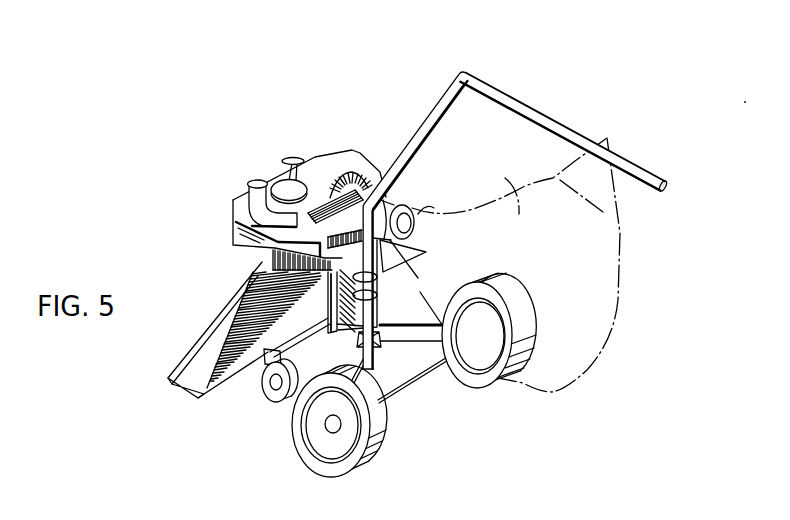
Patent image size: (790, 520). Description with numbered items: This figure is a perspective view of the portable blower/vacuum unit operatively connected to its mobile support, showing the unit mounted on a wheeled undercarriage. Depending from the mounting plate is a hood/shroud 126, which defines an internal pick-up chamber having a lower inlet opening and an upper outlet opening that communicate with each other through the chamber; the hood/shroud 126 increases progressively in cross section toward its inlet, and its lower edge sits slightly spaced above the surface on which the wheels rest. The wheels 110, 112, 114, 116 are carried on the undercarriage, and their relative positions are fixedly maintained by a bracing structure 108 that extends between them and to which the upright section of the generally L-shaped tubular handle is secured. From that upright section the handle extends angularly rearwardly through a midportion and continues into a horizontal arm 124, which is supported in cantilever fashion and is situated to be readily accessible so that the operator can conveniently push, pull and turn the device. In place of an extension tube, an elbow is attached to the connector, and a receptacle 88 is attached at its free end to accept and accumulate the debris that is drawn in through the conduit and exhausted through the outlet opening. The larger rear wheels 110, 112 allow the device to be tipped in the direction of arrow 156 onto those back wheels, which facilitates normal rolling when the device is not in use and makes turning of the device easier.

The arrow 156 is at (510, 196).
The horizontal arm 124 is at (523, 105).
The receptacle 88 is at (506, 180).
The hood/shroud 126 is at (206, 324).
The wheel 116 is at (401, 322).
The bracing structure 108 is at (384, 357).
The rear wheel 110 is at (488, 380).
The rear wheel 112 is at (307, 437).
The wheel 114 is at (268, 386).